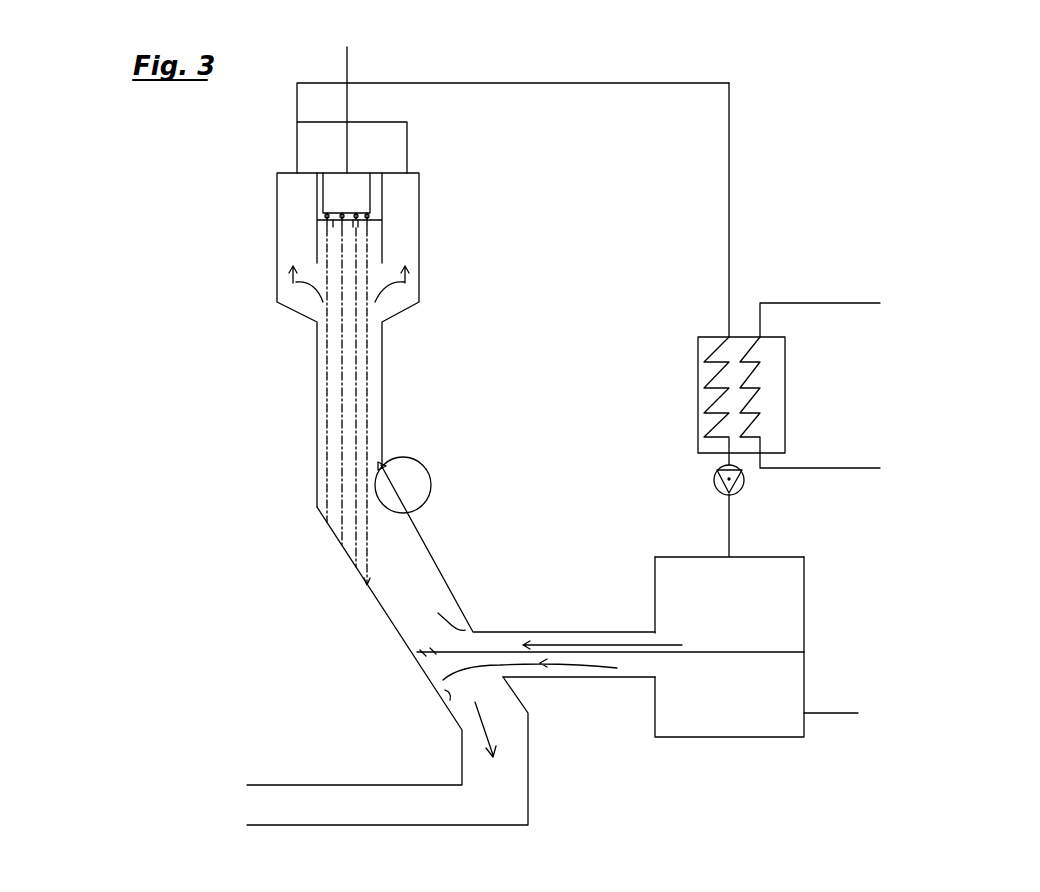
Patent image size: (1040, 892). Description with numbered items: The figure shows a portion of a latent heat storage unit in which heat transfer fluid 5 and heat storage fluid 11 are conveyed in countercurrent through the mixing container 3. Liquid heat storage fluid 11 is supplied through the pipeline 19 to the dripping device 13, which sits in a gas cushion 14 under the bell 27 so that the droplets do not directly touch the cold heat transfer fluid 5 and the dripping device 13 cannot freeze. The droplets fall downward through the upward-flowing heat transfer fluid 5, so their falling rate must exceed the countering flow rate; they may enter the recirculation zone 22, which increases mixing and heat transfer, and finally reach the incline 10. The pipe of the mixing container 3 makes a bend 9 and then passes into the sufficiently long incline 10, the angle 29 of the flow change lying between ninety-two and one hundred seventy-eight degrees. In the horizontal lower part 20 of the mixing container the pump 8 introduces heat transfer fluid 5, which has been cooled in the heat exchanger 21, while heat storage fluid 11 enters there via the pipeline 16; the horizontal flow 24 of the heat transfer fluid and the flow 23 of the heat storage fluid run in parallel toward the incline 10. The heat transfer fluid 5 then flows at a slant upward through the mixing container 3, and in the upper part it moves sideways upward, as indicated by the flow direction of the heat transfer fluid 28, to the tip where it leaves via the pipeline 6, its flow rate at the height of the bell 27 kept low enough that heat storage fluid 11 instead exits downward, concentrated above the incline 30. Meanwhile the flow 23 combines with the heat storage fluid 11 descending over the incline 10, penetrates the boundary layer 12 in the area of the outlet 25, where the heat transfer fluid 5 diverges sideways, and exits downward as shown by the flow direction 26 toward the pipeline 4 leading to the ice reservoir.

The mixing container 3 is at (315, 373).
The pipeline 4 is at (292, 785).
The heat transfer fluid 5 is at (373, 407).
The pipeline 6 is at (302, 93).
The pump 8 is at (745, 487).
The bend 9 is at (317, 508).
The incline 10 is at (360, 578).
The heat storage fluid 11 is at (377, 227).
The boundary layer 12 is at (763, 652).
The dripping device 13 is at (327, 213).
The gas cushion 14 is at (374, 206).
The pipeline 16 is at (855, 705).
The pipeline 19 is at (347, 47).
The horizontal lower part of the mixing container 20 is at (795, 558).
The heat exchanger 21 is at (777, 393).
The recirculation zone 22 is at (388, 478).
The flow of the heat storage fluid 23 is at (443, 680).
The horizontal flow of the heat transfer fluid 24 is at (527, 645).
The outlet 25 is at (427, 652).
The flow direction 26 is at (501, 743).
The bell 27 is at (383, 240).
The flow direction of the heat transfer fluid 28 is at (300, 285).
The angle 29 is at (395, 470).
The incline 30 is at (300, 315).